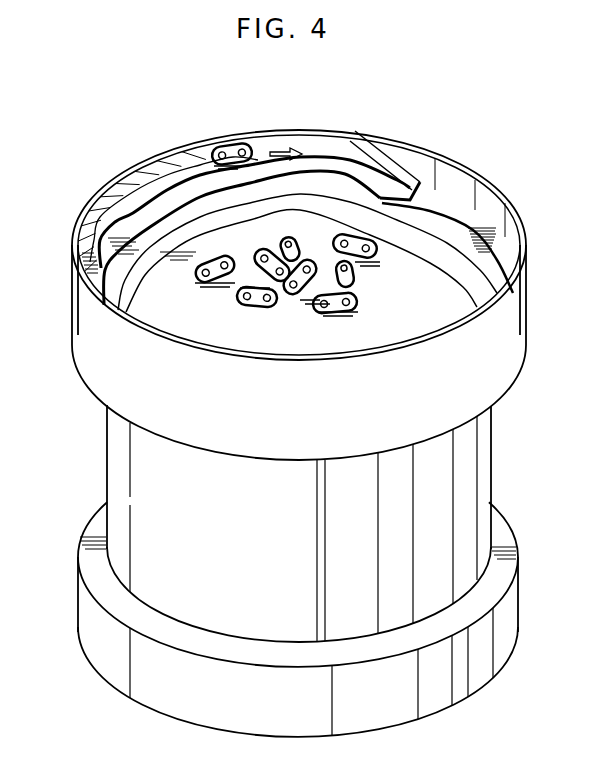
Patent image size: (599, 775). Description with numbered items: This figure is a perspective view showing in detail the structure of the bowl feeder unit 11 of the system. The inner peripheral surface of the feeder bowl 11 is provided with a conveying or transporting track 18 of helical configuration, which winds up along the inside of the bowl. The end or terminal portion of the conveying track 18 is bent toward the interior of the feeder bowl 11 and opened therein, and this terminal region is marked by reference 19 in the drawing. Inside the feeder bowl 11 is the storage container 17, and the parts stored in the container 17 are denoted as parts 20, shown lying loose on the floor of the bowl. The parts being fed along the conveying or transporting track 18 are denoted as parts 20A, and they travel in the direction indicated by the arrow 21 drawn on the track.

The feeder bowl 11 is at (75, 318).
The storage container 17 is at (191, 258).
The conveying track 18 is at (97, 196).
The discharge tongue 19 is at (397, 190).
The parts 20 is at (370, 254).
The parts being fed 20A is at (227, 147).
The arrow 21 is at (290, 150).